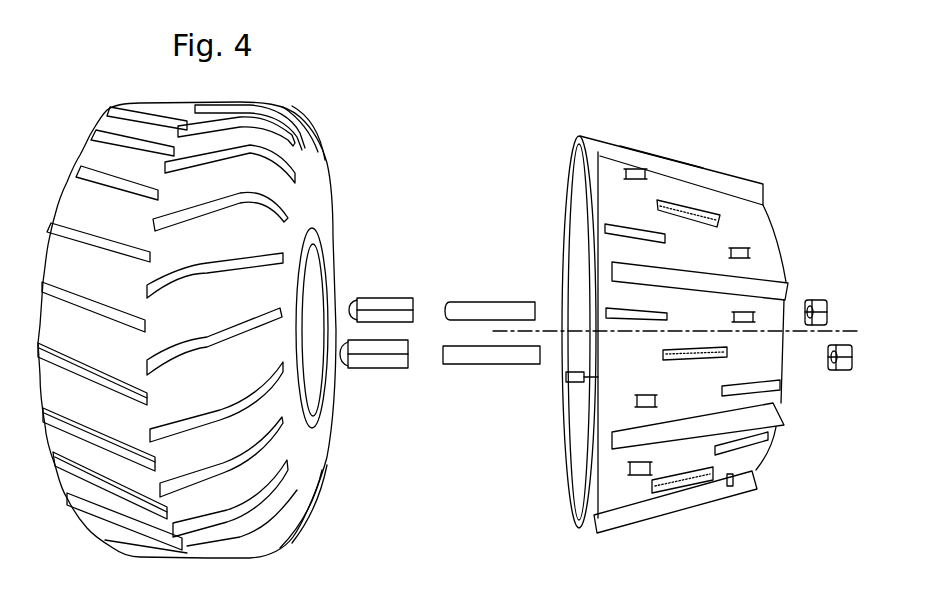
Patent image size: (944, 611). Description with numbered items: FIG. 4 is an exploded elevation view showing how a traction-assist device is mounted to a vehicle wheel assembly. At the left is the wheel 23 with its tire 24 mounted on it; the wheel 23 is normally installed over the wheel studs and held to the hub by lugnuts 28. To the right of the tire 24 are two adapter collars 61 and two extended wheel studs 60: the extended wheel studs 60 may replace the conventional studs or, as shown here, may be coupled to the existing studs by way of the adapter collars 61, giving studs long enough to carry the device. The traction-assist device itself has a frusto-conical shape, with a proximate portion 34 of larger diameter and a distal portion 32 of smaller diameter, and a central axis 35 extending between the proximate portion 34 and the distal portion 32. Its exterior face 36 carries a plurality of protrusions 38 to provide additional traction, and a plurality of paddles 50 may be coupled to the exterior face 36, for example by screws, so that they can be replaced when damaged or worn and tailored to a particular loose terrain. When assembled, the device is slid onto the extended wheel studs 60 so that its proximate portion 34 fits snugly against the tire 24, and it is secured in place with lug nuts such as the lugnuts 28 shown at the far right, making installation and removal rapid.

The wheel 23 is at (308, 423).
The tire 24 is at (318, 150).
The lugnut 28 is at (814, 298).
The distal portion 32 is at (767, 222).
The proximate portion 34 is at (578, 138).
The central axis 35 is at (798, 335).
The exterior face 36 is at (620, 197).
The protrusion 38 is at (748, 452).
The paddle 50 is at (705, 168).
The extended wheel stud 60 is at (483, 365).
The adapter collar 61 is at (380, 370).